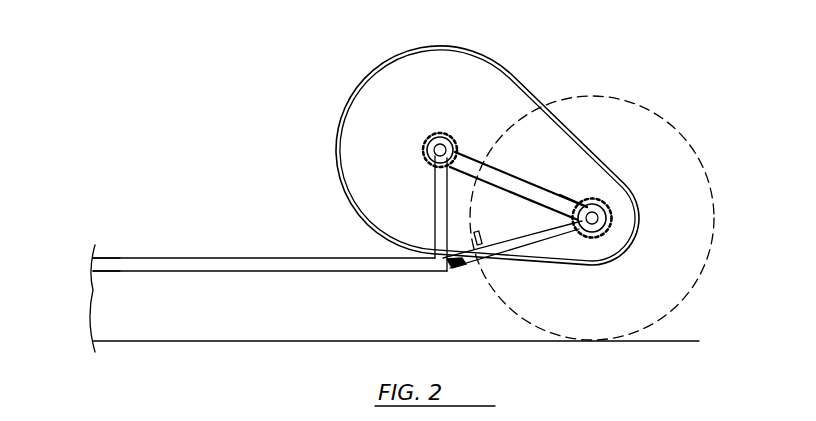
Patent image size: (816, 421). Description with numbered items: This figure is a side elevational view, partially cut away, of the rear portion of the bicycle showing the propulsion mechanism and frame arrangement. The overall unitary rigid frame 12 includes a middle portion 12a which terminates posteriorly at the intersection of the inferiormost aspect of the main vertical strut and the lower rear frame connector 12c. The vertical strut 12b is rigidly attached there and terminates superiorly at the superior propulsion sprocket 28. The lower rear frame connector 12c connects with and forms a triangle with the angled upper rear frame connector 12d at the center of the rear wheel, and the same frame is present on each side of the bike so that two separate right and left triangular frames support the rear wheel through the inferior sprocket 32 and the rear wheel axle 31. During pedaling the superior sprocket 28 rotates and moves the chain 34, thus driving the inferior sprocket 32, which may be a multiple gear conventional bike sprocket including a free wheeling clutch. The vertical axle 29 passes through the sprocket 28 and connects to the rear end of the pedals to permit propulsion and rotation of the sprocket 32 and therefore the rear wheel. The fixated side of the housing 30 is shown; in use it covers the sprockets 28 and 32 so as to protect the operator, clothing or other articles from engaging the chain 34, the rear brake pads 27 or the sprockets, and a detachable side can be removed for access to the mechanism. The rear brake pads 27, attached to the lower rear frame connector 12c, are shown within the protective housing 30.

The unitary rigid frame 12 is at (127, 273).
The middle portion 12a is at (295, 263).
The vertical strut 12b is at (440, 218).
The lower rear frame connector 12c is at (468, 266).
The upper rear frame connector 12d is at (507, 172).
The rear brake pads 27 is at (484, 236).
The superior propulsion sprocket 28 is at (466, 136).
The vertical axle 29 is at (437, 141).
The housing 30 is at (398, 60).
The rear wheel axle 31 is at (611, 217).
The inferior sprocket 32 is at (607, 197).
The chain 34 is at (588, 180).